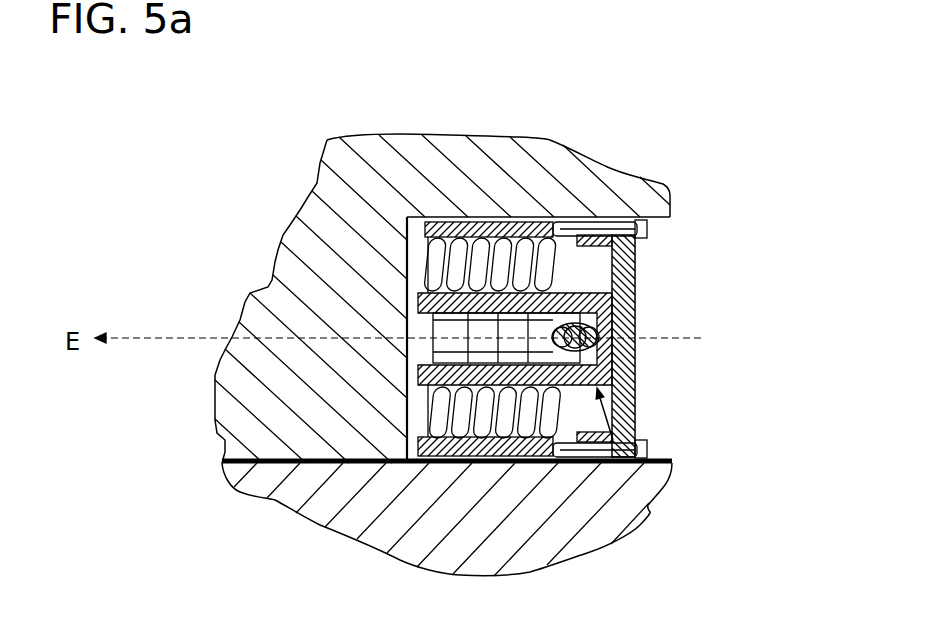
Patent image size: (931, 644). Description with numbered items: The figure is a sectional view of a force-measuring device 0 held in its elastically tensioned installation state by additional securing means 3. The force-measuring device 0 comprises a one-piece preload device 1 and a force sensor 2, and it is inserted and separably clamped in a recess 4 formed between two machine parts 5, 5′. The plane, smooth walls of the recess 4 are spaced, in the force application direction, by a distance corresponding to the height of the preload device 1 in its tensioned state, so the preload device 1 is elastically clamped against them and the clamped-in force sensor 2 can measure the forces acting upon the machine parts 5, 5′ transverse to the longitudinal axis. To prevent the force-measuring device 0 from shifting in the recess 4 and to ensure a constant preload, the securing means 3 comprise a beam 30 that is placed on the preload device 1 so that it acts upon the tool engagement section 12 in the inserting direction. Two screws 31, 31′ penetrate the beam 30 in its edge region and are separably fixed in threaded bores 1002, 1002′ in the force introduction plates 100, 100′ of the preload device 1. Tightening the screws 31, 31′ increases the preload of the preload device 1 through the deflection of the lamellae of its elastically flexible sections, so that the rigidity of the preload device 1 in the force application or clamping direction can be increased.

The force-measuring device 0 is at (404, 277).
The preload device 1 is at (427, 298).
The force sensor 2 is at (455, 338).
The securing means 3 is at (783, 211).
The recess 4 is at (404, 441).
The machine part 5 is at (442, 178).
The machine part 5′ is at (408, 538).
The tool engagement section 12 is at (628, 462).
The beam 30 is at (600, 340).
The screw 31 is at (647, 230).
The screw 31′ is at (650, 449).
The force introduction plate 100 is at (505, 222).
The force introduction plate 100′ is at (520, 462).
The threaded bore 1002 is at (562, 228).
The threaded bore 1002′ is at (560, 462).